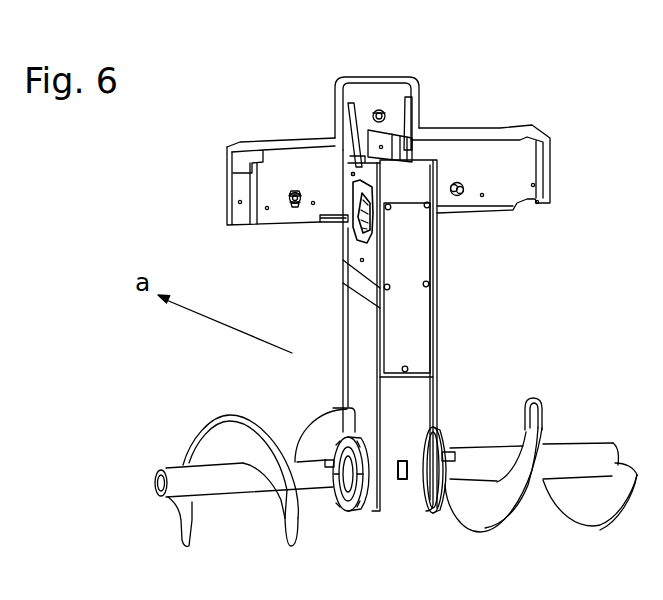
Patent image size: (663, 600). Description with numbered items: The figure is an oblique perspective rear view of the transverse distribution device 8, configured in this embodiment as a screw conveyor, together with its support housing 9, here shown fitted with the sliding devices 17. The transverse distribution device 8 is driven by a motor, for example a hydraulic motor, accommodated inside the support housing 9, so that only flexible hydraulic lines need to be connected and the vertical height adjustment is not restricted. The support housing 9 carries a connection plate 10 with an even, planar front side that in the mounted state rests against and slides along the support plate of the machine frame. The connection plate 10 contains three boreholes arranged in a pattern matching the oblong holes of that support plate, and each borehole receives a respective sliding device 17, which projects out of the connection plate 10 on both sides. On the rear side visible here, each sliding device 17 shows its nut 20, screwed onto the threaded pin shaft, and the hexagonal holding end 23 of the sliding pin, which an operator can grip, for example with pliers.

The transverse distribution device 8 is at (488, 507).
The support housing 9 is at (415, 318).
The connection plate 10 is at (403, 84).
The sliding device 17 is at (380, 109).
The nut 20 is at (291, 203).
The holding end 23 is at (298, 209).